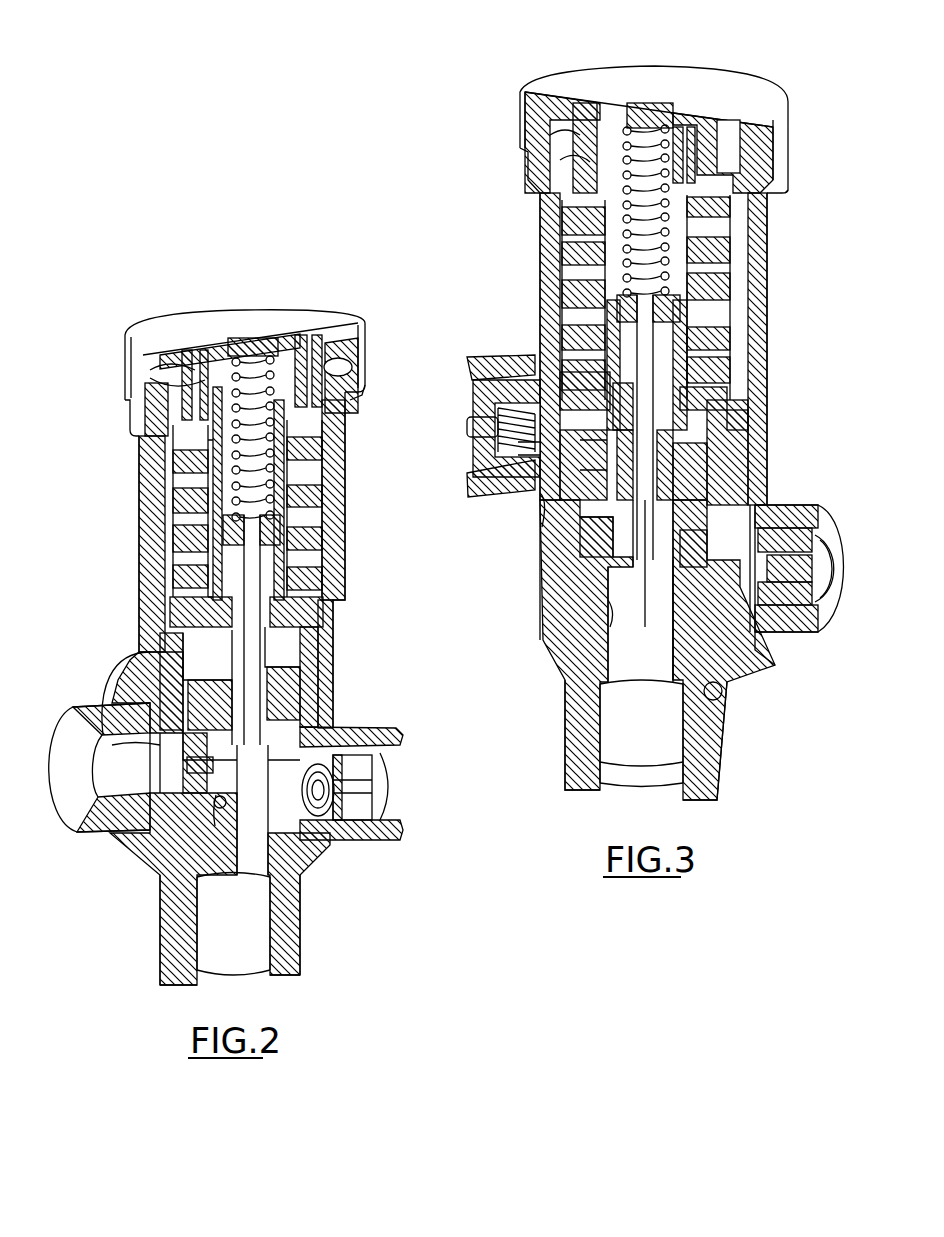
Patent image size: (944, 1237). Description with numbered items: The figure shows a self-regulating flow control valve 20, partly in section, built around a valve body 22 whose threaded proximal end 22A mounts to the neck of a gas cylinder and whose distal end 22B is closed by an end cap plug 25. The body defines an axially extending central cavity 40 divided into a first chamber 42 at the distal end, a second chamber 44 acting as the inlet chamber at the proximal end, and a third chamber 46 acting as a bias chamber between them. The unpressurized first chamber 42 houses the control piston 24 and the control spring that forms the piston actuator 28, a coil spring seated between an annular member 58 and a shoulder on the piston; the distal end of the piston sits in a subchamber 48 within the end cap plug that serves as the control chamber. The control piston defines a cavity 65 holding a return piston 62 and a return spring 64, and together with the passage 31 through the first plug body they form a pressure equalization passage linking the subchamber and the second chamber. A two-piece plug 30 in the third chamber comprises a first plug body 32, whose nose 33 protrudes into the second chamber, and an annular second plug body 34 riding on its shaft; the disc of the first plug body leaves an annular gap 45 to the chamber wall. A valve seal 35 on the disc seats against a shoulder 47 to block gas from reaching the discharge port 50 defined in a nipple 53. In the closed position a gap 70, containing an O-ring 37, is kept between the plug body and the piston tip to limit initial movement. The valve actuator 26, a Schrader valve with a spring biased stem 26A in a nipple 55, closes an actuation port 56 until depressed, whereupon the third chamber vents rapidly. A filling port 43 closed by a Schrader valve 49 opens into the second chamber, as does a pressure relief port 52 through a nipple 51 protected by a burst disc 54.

In FIG. 2, the self-regulating flow control valve 20 is at (110, 352).
In FIG. 3, the self-regulating flow control valve 20 is at (505, 86).
In FIG. 2, the valve body 22 is at (140, 490).
In FIG. 3, the valve body 22 is at (540, 232).
In FIG. 2, the proximal end of valve body 22A is at (302, 884).
In FIG. 3, the proximal end of valve body 22A is at (720, 750).
In FIG. 2, the distal end of valve body 22B is at (362, 396).
In FIG. 3, the distal end of valve body 22B is at (787, 188).
In FIG. 2, the control piston 24 is at (328, 444).
In FIG. 3, the control piston 24 is at (717, 223).
In FIG. 2, the end cap plug 25 is at (244, 356).
In FIG. 3, the end cap plug 25 is at (773, 122).
In FIG. 3, the valve actuator 26 is at (457, 448).
In FIG. 3, the spring biased stem 26A is at (467, 422).
In FIG. 2, the piston actuator 28 is at (192, 535).
In FIG. 3, the piston actuator 28 is at (750, 283).
In FIG. 2, the two-piece plug 30 is at (323, 702).
In FIG. 3, the two-piece plug 30 is at (748, 452).
In FIG. 3, the passage 31 is at (647, 600).
In FIG. 2, the first plug body 32 is at (323, 721).
In FIG. 3, the first plug body 32 is at (548, 580).
In FIG. 2, the nose 33 is at (250, 796).
In FIG. 3, the nose 33 is at (672, 657).
In FIG. 2, the second plug body 34 is at (323, 672).
In FIG. 3, the second plug body 34 is at (545, 545).
In FIG. 2, the valve seal 35 is at (190, 784).
In FIG. 2, the O-ring 37 is at (185, 572).
In FIG. 2, the central cavity 40 is at (312, 528).
In FIG. 3, the central cavity 40 is at (720, 318).
In FIG. 2, the first chamber 42 is at (172, 446).
In FIG. 3, the first chamber 42 is at (573, 198).
In FIG. 2, the filling port 43 is at (305, 837).
In FIG. 2, the second chamber 44 is at (247, 913).
In FIG. 3, the second chamber 44 is at (655, 718).
In FIG. 2, the annular gap 45 is at (180, 752).
In FIG. 3, the annular gap 45 is at (752, 520).
In FIG. 2, the third chamber 46 is at (330, 636).
In FIG. 3, the third chamber 46 is at (752, 440).
In FIG. 2, the shoulder 47 is at (218, 826).
In FIG. 2, the subchamber 48 is at (278, 372).
In FIG. 3, the subchamber 48 is at (683, 140).
In FIG. 2, the Schrader valve 49 is at (390, 775).
In FIG. 2, the discharge port 50 is at (147, 781).
In FIG. 3, the nipple 51 is at (812, 508).
In FIG. 3, the pressure relief port 52 is at (755, 655).
In FIG. 2, the nipple 53 is at (93, 705).
In FIG. 3, the burst disc 54 is at (832, 602).
In FIG. 3, the nipple 55 is at (480, 352).
In FIG. 3, the actuation port 56 is at (520, 455).
In FIG. 2, the annular member 58 is at (323, 609).
In FIG. 3, the annular member 58 is at (755, 412).
In FIG. 2, the return piston 62 is at (328, 568).
In FIG. 3, the return piston 62 is at (742, 362).
In FIG. 2, the return spring 64 is at (330, 500).
In FIG. 3, the return spring 64 is at (723, 243).
In FIG. 2, the cavity 65 is at (330, 478).
In FIG. 3, the cavity 65 is at (600, 262).
In FIG. 3, the gap 70 is at (548, 530).